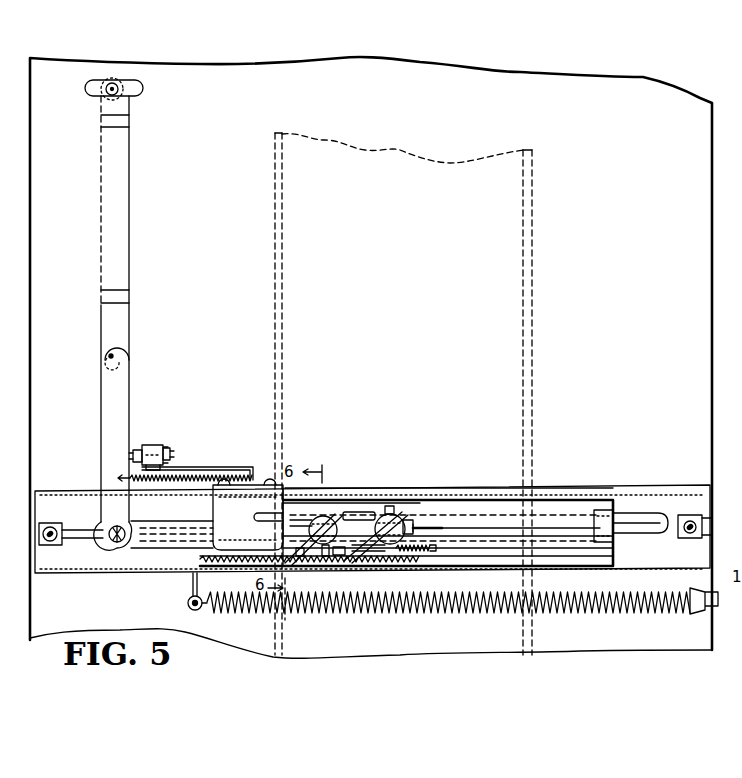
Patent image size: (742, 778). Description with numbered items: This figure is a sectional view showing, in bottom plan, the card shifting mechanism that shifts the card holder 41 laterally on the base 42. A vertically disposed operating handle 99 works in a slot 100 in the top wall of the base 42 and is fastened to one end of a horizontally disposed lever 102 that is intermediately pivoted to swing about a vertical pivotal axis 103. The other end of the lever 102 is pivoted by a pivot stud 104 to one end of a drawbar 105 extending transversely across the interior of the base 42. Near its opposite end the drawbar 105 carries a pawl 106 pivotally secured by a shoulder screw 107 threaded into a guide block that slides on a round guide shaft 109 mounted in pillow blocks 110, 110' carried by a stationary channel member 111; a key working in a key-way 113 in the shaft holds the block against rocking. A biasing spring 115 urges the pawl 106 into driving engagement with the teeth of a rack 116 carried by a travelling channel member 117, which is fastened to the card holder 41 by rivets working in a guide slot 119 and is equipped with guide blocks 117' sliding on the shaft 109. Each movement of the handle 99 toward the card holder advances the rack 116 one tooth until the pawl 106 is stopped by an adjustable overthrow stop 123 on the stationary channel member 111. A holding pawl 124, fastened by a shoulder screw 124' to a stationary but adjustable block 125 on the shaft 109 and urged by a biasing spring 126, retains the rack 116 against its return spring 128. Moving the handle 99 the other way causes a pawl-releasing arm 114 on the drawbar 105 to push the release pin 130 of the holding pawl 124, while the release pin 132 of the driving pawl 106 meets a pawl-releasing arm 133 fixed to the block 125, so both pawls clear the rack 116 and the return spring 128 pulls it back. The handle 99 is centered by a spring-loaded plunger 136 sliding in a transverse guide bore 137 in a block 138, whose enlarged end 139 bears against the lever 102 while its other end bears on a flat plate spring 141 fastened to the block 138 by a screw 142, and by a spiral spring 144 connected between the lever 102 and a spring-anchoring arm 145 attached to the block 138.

The card holder 41 is at (531, 158).
The base 42 is at (690, 93).
The operating handle 99 is at (120, 93).
The slot 100 is at (92, 93).
The lever 102 is at (100, 250).
The pivotal axis 103 is at (107, 363).
The pivot stud 104 is at (121, 525).
The drawbar 105 is at (172, 548).
The pawl 106 is at (300, 557).
The shoulder screw 107 is at (331, 516).
The guide shaft 109 is at (485, 527).
The pillow block 110 is at (67, 502).
The pillow block 110' is at (695, 496).
The stationary channel member 111 is at (452, 488).
The key-way 113 is at (420, 525).
The pawl-releasing arm 114 is at (362, 512).
The biasing spring 115 is at (318, 517).
The rack 116 is at (240, 566).
The travelling channel member 117 is at (438, 478).
The guide blocks 117' is at (386, 512).
The guide slot 119 is at (637, 513).
The overthrow stop 123 is at (262, 487).
The holding pawl 124 is at (377, 567).
The shoulder screw 124' is at (378, 498).
The adjustable block 125 is at (405, 520).
The biasing spring 126 is at (420, 551).
The return spring 128 is at (490, 613).
The release pin 130 is at (393, 507).
The release pin 132 is at (326, 556).
The pawl-releasing arm 133 is at (340, 555).
The spring-loaded plunger 136 is at (150, 446).
The guide bore 137 is at (166, 447).
The block 138 is at (153, 456).
The enlarged end 139 is at (138, 450).
The flat plate spring 141 is at (166, 455).
The screw 142 is at (172, 455).
The spiral spring 144 is at (172, 482).
The spring-anchoring arm 145 is at (207, 468).